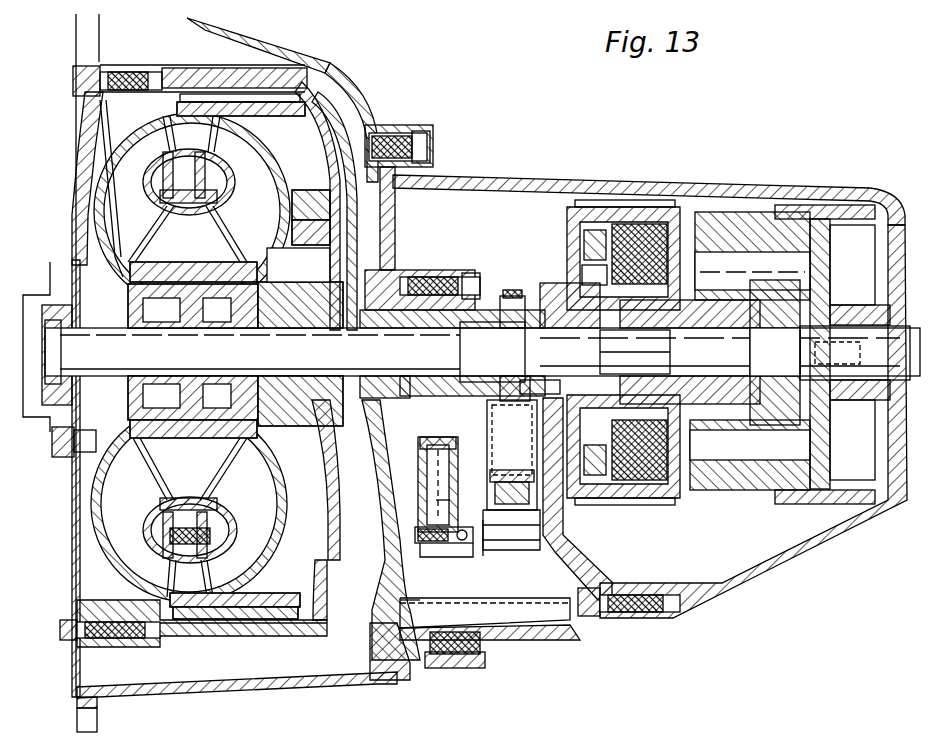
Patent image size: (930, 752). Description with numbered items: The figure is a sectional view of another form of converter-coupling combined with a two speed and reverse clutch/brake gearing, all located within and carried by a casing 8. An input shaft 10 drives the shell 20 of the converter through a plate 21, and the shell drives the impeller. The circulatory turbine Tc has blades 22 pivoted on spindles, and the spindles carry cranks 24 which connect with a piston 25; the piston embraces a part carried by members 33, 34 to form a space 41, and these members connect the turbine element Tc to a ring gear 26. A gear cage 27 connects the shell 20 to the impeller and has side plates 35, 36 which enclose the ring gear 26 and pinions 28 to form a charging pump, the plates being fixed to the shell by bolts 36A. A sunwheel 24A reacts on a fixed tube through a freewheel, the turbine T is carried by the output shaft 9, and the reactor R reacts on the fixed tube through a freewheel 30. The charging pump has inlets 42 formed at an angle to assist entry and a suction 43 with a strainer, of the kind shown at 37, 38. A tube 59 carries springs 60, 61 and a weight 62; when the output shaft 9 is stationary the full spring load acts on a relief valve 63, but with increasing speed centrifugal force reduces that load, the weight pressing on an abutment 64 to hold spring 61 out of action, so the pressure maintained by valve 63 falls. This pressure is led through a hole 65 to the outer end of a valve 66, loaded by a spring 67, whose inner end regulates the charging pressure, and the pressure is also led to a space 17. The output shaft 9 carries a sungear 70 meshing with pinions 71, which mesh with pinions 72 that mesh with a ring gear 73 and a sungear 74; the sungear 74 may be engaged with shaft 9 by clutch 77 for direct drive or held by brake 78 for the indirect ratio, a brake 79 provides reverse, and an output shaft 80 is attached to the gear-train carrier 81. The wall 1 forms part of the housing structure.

The housing wall 1 is at (314, 146).
The casing 8 is at (305, 57).
The output shaft 9 is at (406, 352).
The input shaft 10 is at (34, 397).
The space 17 is at (440, 470).
The shell 20 is at (222, 68).
The plate 21 is at (74, 486).
The blades 22 is at (176, 140).
The cranks 24 is at (190, 102).
The sunwheel 24A is at (298, 265).
The piston 25 is at (222, 312).
The ring gear 26 is at (292, 200).
The gear cage 27 is at (305, 318).
The pinions 28 is at (292, 226).
The freewheel 30 is at (162, 312).
The member 33 is at (305, 125).
The member 34 is at (328, 70).
The side plate 35 is at (240, 435).
The side plate 36 is at (340, 488).
The bolts 36A is at (275, 460).
The pump strainer part 37 is at (512, 625).
The pump strainer part 38 is at (513, 580).
The space 41 is at (245, 95).
The inlets 42 is at (372, 376).
The suction 43 is at (400, 608).
The tube 59 is at (479, 548).
The spring 60 is at (536, 420).
The spring 61 is at (530, 475).
The weight 62 is at (532, 180).
The relief valve 63 is at (512, 380).
The abutment 64 is at (511, 530).
The hole 65 is at (440, 496).
The valve 66 is at (440, 446).
The spring 67 is at (424, 557).
The sungear 70 is at (820, 346).
The pinions 71 is at (750, 250).
The pinions 72 is at (690, 468).
The ring gear 73 is at (716, 490).
The sungear 74 is at (720, 322).
The clutch 77 is at (640, 224).
The brake 78 is at (606, 207).
The brake 79 is at (850, 205).
The output shaft 80 is at (892, 355).
The gear-train carrier 81 is at (825, 285).
The turbine T is at (122, 162).
The circulatory turbine Tc is at (178, 574).
The reactor R is at (170, 230).